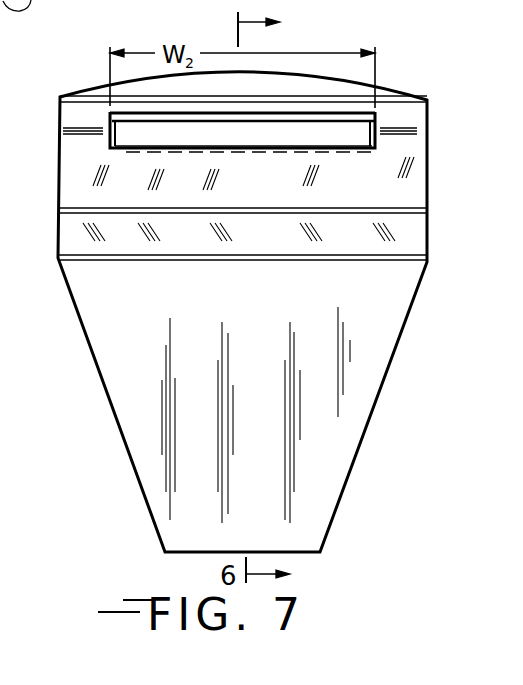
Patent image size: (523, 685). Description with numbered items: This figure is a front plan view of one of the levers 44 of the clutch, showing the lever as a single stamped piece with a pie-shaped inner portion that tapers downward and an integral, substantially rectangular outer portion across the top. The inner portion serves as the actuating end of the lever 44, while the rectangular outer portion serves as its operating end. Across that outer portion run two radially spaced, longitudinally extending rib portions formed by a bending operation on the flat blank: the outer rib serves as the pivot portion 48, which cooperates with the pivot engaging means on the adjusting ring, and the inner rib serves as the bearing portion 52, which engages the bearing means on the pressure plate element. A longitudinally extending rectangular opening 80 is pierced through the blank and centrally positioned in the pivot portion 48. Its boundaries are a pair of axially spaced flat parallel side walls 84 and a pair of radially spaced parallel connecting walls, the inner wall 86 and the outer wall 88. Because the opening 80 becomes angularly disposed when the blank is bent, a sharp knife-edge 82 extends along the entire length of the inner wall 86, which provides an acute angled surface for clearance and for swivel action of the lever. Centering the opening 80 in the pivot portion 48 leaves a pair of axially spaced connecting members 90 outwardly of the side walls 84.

The lever 44 is at (280, 367).
The pivot portion 48 is at (434, 140).
The bearing portion 52 is at (436, 226).
The opening 80 is at (350, 131).
The knife-edge 82 is at (242, 146).
The side walls 84 is at (116, 133).
The inner wall 86 is at (175, 156).
The outer wall 88 is at (291, 117).
The connecting members 90 is at (82, 128).